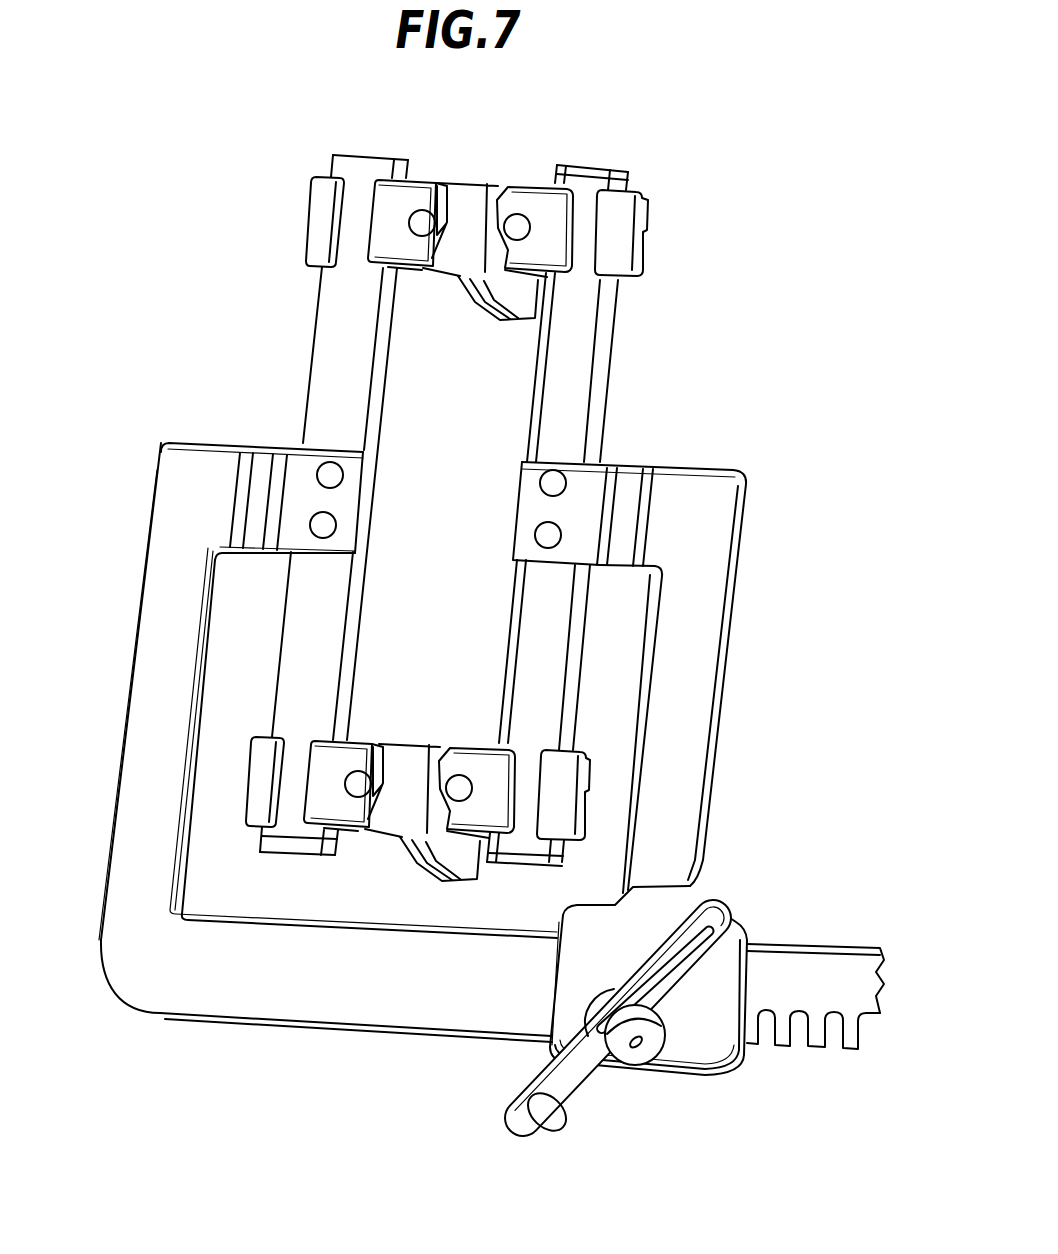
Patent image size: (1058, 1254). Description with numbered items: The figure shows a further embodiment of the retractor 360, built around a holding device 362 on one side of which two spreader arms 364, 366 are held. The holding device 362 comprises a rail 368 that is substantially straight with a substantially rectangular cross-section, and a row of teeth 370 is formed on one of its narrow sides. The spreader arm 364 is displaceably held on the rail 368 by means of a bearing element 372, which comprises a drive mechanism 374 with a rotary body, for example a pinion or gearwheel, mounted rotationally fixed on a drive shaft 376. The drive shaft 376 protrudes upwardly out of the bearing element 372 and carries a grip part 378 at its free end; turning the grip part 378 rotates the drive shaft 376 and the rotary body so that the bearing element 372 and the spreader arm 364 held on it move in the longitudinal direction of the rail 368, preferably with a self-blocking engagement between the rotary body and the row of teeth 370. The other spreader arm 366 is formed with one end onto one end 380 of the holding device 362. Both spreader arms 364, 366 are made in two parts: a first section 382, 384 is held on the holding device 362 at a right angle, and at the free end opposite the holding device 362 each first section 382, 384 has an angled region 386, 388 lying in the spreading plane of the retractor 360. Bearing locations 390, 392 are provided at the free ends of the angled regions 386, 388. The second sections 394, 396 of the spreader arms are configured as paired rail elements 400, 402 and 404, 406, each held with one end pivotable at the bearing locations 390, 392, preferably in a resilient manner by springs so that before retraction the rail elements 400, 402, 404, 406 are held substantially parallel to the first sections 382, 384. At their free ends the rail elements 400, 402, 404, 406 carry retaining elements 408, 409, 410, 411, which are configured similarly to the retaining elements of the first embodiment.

The retractor 360 is at (738, 173).
The holding device 362 is at (316, 1053).
The spreader arm 364 is at (750, 634).
The spreader arm 366 is at (120, 603).
The rail 368 is at (837, 928).
The row of teeth 370 is at (827, 1043).
The bearing element 372 is at (739, 895).
The drive mechanism 374 is at (688, 1100).
The drive shaft 376 is at (644, 1052).
The grip part 378 is at (520, 1110).
The end of the holding device 380 is at (105, 1010).
The first section 382 is at (676, 705).
The first section 384 is at (165, 700).
The angled region 386 is at (678, 493).
The angled region 388 is at (218, 472).
The bearing location 390 is at (498, 511).
The bearing location 392 is at (390, 495).
The second section 394 is at (668, 290).
The second section 396 is at (283, 276).
The rail element 400 is at (578, 352).
The rail element 402 is at (525, 634).
The rail element 404 is at (345, 342).
The rail element 406 is at (315, 617).
The retaining element 408 is at (497, 198).
The retaining element 409 is at (440, 768).
The retaining element 410 is at (452, 200).
The retaining element 411 is at (402, 768).